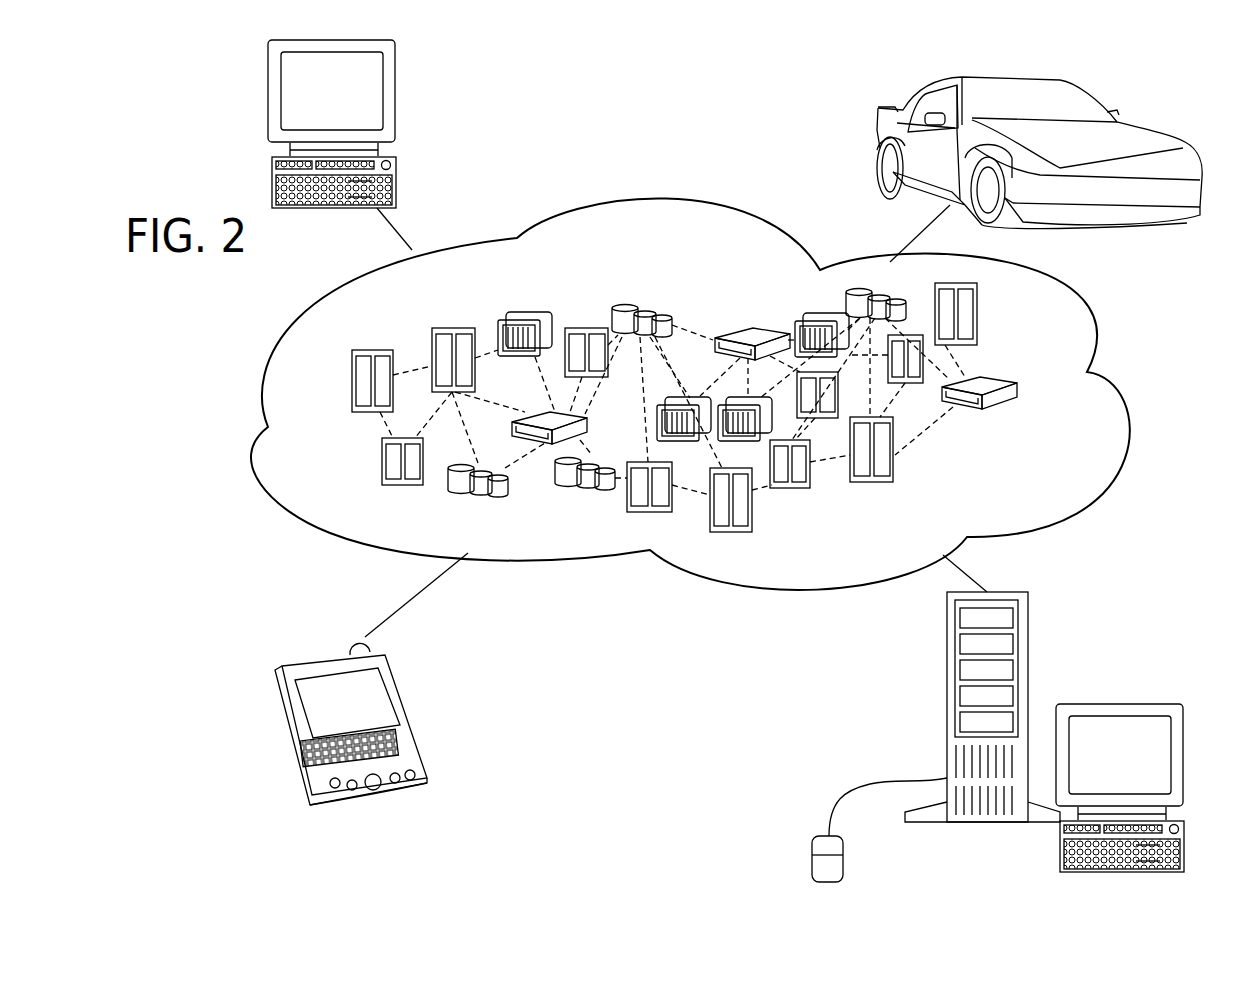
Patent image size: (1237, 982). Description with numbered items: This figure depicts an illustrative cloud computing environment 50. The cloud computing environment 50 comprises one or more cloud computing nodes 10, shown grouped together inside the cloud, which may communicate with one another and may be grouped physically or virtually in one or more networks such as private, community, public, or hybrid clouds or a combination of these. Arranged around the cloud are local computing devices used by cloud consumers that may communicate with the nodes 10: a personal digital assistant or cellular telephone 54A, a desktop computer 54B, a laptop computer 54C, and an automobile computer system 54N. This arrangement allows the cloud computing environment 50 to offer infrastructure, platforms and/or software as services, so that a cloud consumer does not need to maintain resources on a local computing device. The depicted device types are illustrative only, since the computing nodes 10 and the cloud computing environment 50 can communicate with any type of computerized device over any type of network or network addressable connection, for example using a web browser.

The cloud computing nodes 10 is at (1003, 414).
The cloud computing environment 50 is at (1087, 372).
The personal digital assistant or cellular telephone 54A is at (405, 716).
The desktop computer 54B is at (1115, 704).
The laptop computer 54C is at (397, 166).
The automobile computer system 54N is at (872, 146).